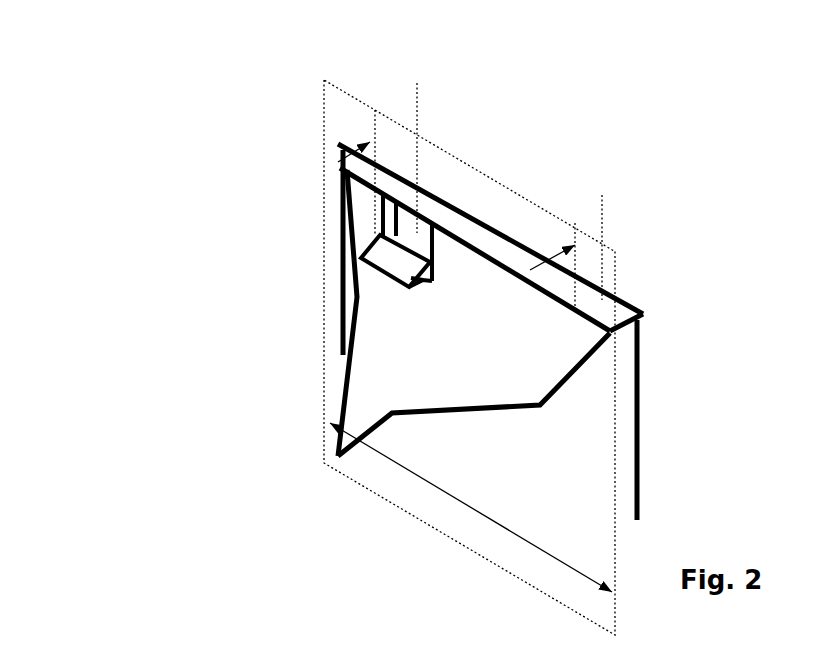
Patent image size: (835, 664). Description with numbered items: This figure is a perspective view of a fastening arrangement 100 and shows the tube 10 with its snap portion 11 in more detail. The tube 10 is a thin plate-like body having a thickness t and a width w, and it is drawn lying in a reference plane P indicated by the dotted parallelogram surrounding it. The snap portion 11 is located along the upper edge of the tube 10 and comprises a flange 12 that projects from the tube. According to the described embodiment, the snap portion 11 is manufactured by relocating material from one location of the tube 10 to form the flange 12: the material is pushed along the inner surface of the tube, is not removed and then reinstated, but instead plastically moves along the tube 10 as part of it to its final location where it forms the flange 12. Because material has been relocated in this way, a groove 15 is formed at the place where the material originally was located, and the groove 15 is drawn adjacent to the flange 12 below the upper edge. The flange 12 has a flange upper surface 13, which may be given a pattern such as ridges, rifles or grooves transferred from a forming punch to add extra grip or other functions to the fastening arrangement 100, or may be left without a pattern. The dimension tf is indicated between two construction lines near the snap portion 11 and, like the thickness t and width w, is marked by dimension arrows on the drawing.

The fastening arrangement 100 is at (170, 135).
The tube 10 is at (538, 330).
The snap portion 11 is at (360, 179).
The flange 12 is at (400, 282).
The flange upper surface 13 is at (388, 256).
The groove 15 is at (410, 224).
The reference plane P is at (322, 108).
The thickness t is at (660, 185).
The flange thickness tf is at (463, 72).
The width w is at (471, 507).